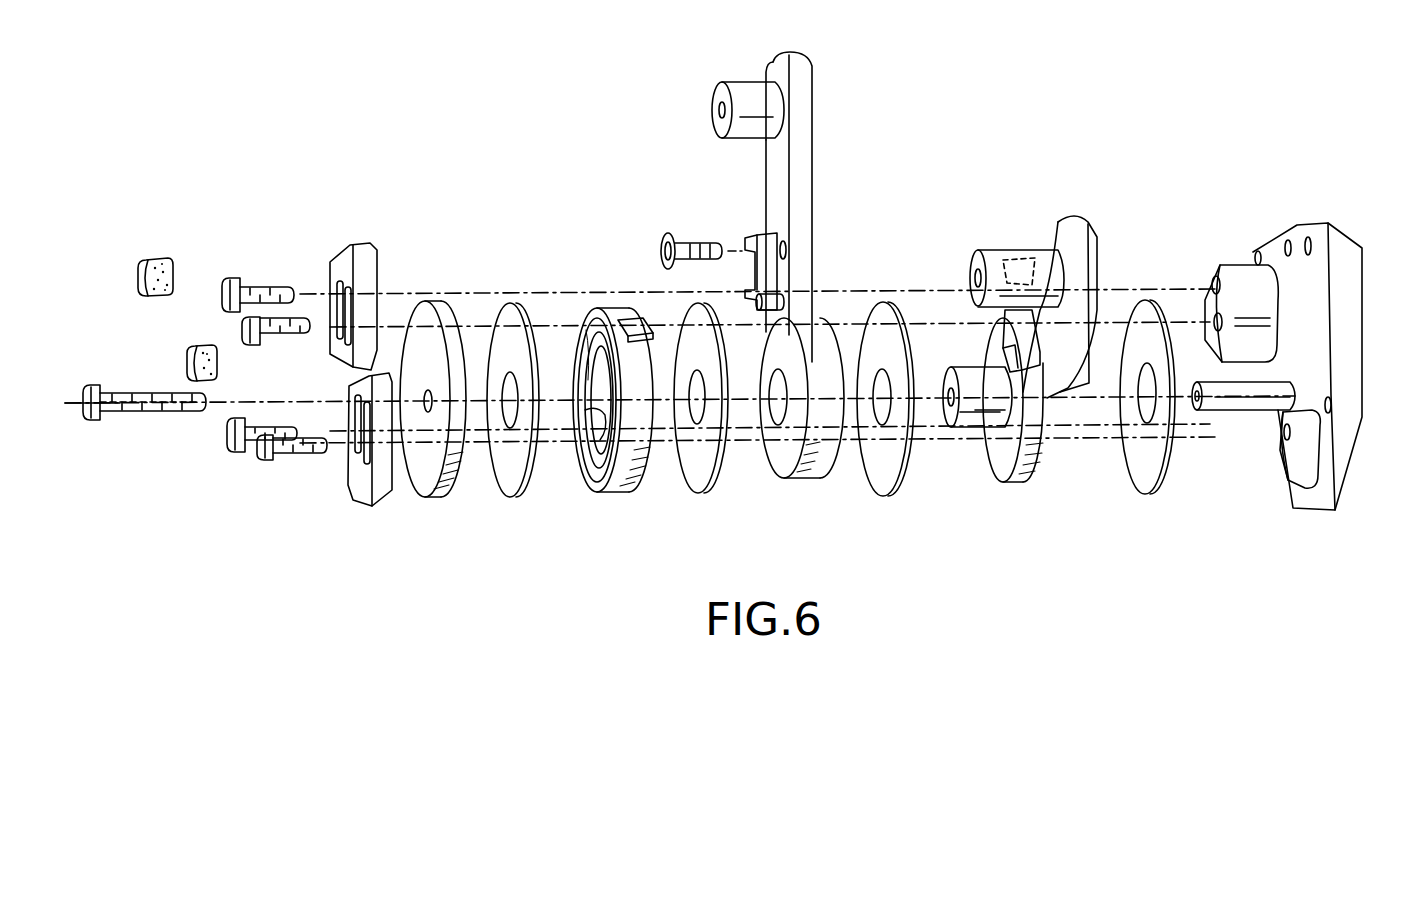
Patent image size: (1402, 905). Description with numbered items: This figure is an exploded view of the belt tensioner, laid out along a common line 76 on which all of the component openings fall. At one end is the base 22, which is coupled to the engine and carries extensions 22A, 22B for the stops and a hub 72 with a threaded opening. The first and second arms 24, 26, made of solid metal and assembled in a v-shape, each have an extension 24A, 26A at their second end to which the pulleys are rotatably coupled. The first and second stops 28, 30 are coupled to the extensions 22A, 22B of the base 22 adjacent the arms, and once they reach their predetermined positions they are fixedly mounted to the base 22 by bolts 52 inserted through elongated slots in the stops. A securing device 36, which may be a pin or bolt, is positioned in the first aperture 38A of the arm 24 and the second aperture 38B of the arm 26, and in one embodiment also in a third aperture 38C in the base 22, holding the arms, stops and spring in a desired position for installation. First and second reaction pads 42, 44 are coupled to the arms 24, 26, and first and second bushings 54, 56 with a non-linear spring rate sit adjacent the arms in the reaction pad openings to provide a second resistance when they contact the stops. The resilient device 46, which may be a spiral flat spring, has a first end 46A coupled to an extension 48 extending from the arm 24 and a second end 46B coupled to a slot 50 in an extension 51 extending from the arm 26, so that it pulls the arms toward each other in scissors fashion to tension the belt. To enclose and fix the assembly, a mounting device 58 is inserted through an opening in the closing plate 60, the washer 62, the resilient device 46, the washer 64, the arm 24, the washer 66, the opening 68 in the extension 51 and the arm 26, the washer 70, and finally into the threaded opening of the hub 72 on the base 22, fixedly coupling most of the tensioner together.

The base 22 is at (1293, 356).
The extension 22A is at (1278, 453).
The extension 22B is at (1238, 270).
The first arm 24 is at (788, 250).
The extension 24A is at (743, 83).
The second arm 26 is at (1013, 326).
The extension 26A is at (1013, 250).
The first stop 28 is at (362, 250).
The second stop 30 is at (377, 498).
The securing device 36 is at (698, 242).
The first aperture 38A is at (790, 243).
The second aperture 38B is at (992, 250).
The third aperture 38C is at (1263, 255).
The first reaction pad 42 is at (757, 233).
The second reaction pad 44 is at (1007, 330).
The resilient device 46 is at (594, 409).
The first end 46A is at (628, 321).
The second end 46B is at (582, 417).
The extension 48 is at (768, 298).
The slot 50 is at (947, 417).
The extension 51 is at (980, 412).
The bolts 52 is at (276, 320).
The first bushing 54 is at (157, 258).
The second bushing 56 is at (203, 345).
The mounting device 58 is at (140, 413).
The closing plate 60 is at (425, 317).
The washer 62 is at (505, 315).
The washer 64 is at (700, 467).
The washer 66 is at (885, 313).
The opening 68 is at (948, 394).
The washer 70 is at (1140, 453).
The hub 72 is at (1235, 410).
The line 76 is at (75, 403).